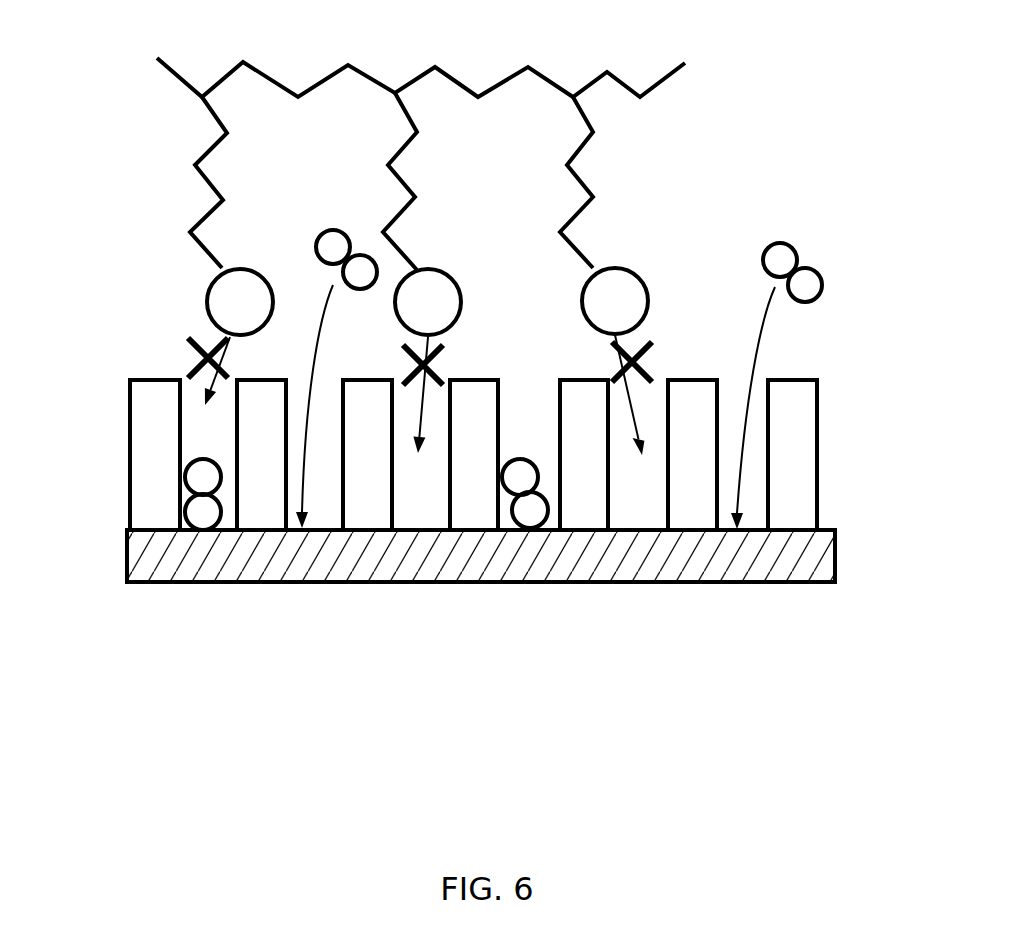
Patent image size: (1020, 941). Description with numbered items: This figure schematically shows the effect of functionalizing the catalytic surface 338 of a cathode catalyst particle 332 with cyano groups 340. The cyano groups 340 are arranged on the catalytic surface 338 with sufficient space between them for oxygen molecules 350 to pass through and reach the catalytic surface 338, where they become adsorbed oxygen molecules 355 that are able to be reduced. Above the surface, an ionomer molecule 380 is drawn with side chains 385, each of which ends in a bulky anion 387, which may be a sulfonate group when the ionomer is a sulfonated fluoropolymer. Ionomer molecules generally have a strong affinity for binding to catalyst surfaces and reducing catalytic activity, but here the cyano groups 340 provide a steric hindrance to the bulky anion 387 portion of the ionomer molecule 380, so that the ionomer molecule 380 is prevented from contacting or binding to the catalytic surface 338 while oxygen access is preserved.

The cathode catalyst particle 332 is at (127, 555).
The catalytic surface 338 is at (823, 514).
The cyano groups 340 is at (368, 380).
The oxygen molecules 350 is at (332, 228).
The adsorbed oxygen molecules 355 is at (205, 458).
The ionomer molecule 380 is at (452, 75).
The side chains 385 is at (215, 182).
The bulky anion 387 is at (238, 265).